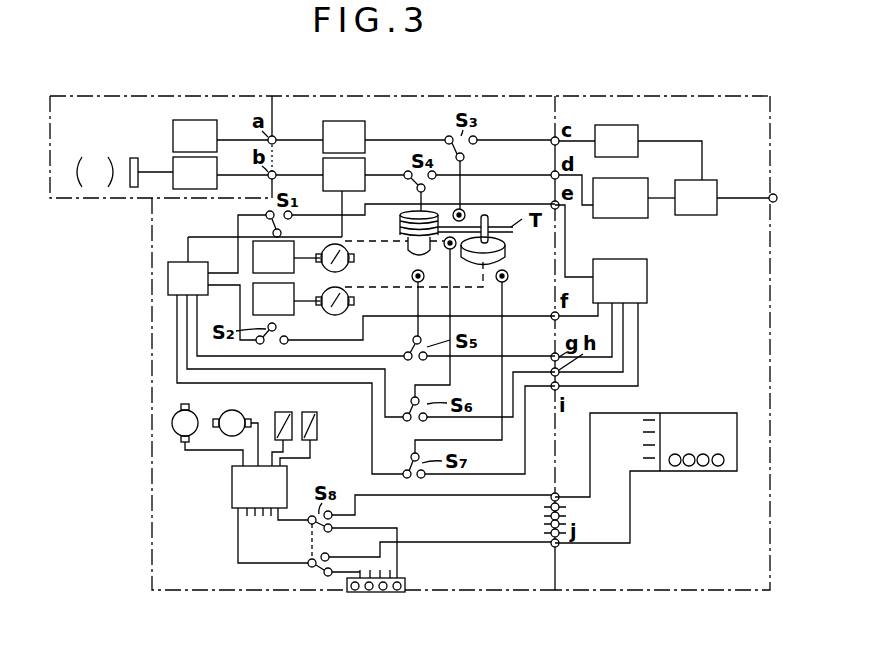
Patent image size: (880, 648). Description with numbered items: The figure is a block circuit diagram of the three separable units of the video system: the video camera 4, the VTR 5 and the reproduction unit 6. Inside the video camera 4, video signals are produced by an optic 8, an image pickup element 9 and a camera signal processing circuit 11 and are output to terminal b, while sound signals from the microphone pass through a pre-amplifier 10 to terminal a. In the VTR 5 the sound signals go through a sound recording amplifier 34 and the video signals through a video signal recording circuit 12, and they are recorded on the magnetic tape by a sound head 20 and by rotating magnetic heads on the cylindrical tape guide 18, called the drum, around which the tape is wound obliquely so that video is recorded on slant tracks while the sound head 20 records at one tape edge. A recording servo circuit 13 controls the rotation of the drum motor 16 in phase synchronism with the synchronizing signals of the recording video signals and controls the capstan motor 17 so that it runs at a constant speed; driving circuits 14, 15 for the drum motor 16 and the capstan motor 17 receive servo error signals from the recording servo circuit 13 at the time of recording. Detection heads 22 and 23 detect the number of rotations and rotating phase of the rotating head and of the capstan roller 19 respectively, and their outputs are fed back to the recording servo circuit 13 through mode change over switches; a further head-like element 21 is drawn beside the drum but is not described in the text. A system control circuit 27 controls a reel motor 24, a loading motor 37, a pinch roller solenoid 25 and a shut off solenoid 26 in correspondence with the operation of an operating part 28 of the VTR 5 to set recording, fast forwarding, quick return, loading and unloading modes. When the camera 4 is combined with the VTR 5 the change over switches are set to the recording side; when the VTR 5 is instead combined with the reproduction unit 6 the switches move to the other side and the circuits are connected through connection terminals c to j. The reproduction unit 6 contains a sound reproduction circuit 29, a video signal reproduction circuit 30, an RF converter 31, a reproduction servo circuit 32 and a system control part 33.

The video camera 4 is at (66, 198).
The VTR 5 is at (200, 590).
The reproduction unit 6 is at (654, 590).
The optic 8 is at (96, 190).
The image pickup element 9 is at (134, 188).
The pre-amplifier 10 is at (195, 136).
The camera signal processing circuit 11 is at (195, 173).
The video signal recording circuit 12 is at (344, 174).
The recording servo circuit 13 is at (286, 368).
The driving circuit 14 is at (286, 257).
The driving circuit 15 is at (286, 299).
The drum motor 16 is at (352, 262).
The capstan motor 17 is at (332, 313).
The cylindrical tape guide 18 is at (400, 229).
The capstan roller 19 is at (507, 250).
The sound head 20 is at (465, 212).
The photo sensor 21 is at (447, 250).
The detection head 22 is at (417, 283).
The detection head 23 is at (509, 280).
The reel motor 24 is at (241, 413).
The pinch roller solenoid 25 is at (285, 412).
The shut off solenoid 26 is at (312, 412).
The system control circuit 27 is at (270, 514).
The operating part 28 is at (406, 588).
The sound reproduction circuit 29 is at (648, 152).
The video signal reproduction circuit 30 is at (634, 198).
The RF converter 31 is at (726, 197).
The reproduction servo circuit 32 is at (599, 297).
The system control part 33 is at (702, 413).
The sound recording amplifier 34 is at (344, 137).
The loading motor 37 is at (180, 445).